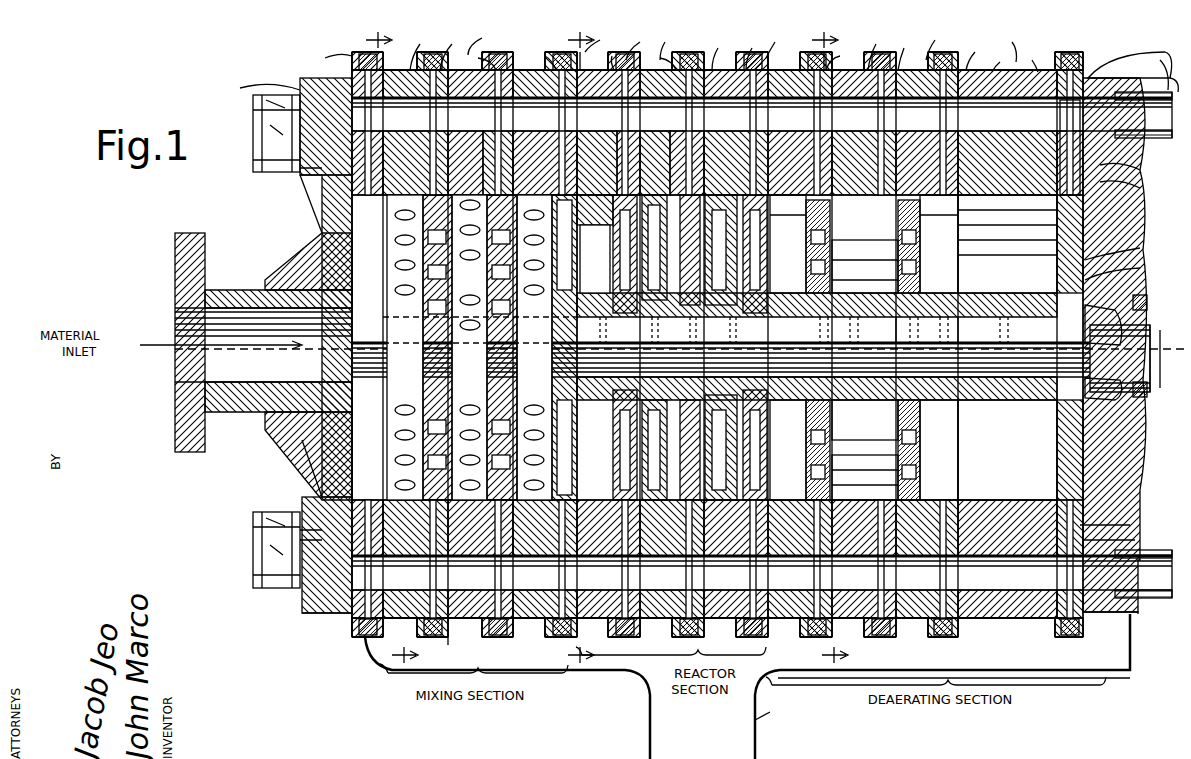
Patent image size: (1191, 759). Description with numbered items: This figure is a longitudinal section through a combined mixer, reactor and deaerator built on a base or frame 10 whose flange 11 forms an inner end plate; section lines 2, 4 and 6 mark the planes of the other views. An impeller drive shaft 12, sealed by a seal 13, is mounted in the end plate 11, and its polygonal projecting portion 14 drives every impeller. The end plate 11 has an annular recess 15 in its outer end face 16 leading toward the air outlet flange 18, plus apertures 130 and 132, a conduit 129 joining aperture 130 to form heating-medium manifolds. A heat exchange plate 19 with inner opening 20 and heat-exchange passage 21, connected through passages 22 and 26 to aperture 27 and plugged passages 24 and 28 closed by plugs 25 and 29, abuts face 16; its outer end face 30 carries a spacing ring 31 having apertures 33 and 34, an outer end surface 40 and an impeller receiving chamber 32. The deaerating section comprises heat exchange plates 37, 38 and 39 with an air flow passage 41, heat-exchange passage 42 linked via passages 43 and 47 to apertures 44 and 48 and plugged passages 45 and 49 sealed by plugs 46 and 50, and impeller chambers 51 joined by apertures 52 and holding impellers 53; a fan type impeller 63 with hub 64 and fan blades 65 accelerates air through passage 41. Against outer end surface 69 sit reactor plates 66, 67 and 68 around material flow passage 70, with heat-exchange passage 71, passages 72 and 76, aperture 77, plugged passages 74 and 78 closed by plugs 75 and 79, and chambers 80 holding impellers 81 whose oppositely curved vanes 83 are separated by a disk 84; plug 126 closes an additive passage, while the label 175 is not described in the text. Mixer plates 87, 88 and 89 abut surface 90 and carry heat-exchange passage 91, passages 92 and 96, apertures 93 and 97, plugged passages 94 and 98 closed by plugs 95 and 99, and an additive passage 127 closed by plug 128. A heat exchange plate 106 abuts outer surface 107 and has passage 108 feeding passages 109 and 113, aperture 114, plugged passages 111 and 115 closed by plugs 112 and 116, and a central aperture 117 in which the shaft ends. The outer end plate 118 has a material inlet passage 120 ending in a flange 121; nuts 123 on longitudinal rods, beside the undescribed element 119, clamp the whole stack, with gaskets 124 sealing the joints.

The section line 2- 2 is at (381, 346).
The section line 4- 4 is at (560, 345).
The section line 6- 6 is at (809, 346).
The base or frame 10 is at (760, 722).
The flange 11 is at (1119, 345).
The impeller drive shaft 12 is at (1153, 340).
The seal 13 is at (1147, 355).
The projecting portion 14 is at (976, 424).
The annular recess 15 is at (1050, 362).
The outer end face 16 is at (1129, 250).
The flange 18 is at (1102, 70).
The heat exchange plate 19 is at (1136, 191).
The inner annular opening 20 is at (1085, 318).
The passage 21 is at (1129, 270).
The passage 22 is at (1136, 174).
The passage 24 is at (1112, 58).
The screw threaded plug 25 is at (1066, 112).
The passage 26 is at (1121, 524).
The aperture 27 is at (1127, 544).
The passage 28 is at (1090, 612).
The screw threaded plug 29 is at (1074, 637).
The outer end face 30 is at (1036, 58).
The spacing ring 31 is at (1016, 43).
The impeller receiving chamber 32 is at (992, 236).
The aperture 33 is at (996, 58).
The aperture 34 is at (1026, 618).
The heat exchange plate 37 is at (937, 42).
The heat exchange plate 38 is at (840, 55).
The heat exchange plate 39 is at (776, 41).
The outer end surface 40 is at (976, 52).
The air flow passage 41 is at (920, 270).
The passage 42 is at (880, 240).
The passage 43 is at (898, 122).
The aperture 44 is at (800, 123).
The passage 45 is at (902, 50).
The screw threaded plug 46 is at (876, 49).
The passage 47 is at (870, 490).
The aperture 48 is at (864, 568).
The passage 49 is at (927, 568).
The screw threaded plug 50 is at (876, 637).
The impeller receiving chamber 51 is at (864, 123).
The axially extending apertures 52 is at (812, 240).
The impeller 53 is at (900, 408).
The fan type impeller 63 is at (945, 290).
The hub 64 is at (940, 320).
The fan type blades 65 is at (983, 272).
The heat exchange plate 66 is at (718, 50).
The heat exchange plate 67 is at (662, 55).
The heat exchange plate 68 is at (603, 38).
The outer end surface 69 is at (752, 50).
The flow passage 70 is at (660, 250).
The passage 71 is at (736, 123).
The passage 72 is at (672, 123).
The passage 74 is at (628, 153).
The screw threaded plug 75 is at (638, 42).
The passage 76 is at (612, 582).
The aperture 77 is at (545, 568).
The passage 78 is at (608, 568).
The screw threaded plug 79 is at (634, 640).
The annular recess 80 is at (608, 123).
The impeller 81 is at (732, 320).
The vanes 83 is at (575, 328).
The disk 84 is at (500, 347).
The heat exchange plate 87 is at (538, 55).
The heat exchange plate 88 is at (482, 55).
The heat exchange plate 89 is at (415, 49).
The outer end surface 90 is at (602, 55).
The passage 91 is at (469, 347).
The passage 92 is at (498, 153).
The aperture 93 is at (367, 123).
The passage 94 is at (480, 123).
The plug 95 is at (448, 49).
The passage 96 is at (392, 580).
The aperture 97 is at (367, 568).
The passage 98 is at (480, 568).
The screw threaded plug 99 is at (445, 649).
The heat exchange plate 106 is at (352, 72).
The outer surface 107 is at (415, 123).
The passage 108 is at (320, 225).
The passage 109 is at (322, 176).
The passage 111 is at (260, 80).
The screw threaded plug 112 is at (348, 58).
The passage 113 is at (320, 500).
The aperture 114 is at (340, 570).
The passage 115 is at (335, 612).
The screw threaded plug 116 is at (352, 634).
The central aperture 117 is at (365, 380).
The outer end plate 118 is at (290, 212).
The nut 119 is at (262, 130).
The material inlet passage 120 is at (270, 290).
The flange 121 is at (189, 330).
The nuts 123 is at (266, 160).
The packing or gasket means 124 is at (1042, 140).
The plug 126 is at (670, 42).
The passage 127 is at (545, 123).
The plug 128 is at (486, 38).
The conduit 129 is at (1159, 57).
The aperture 130 is at (1115, 120).
The aperture 132 is at (1108, 588).
The housing section 175 is at (685, 153).